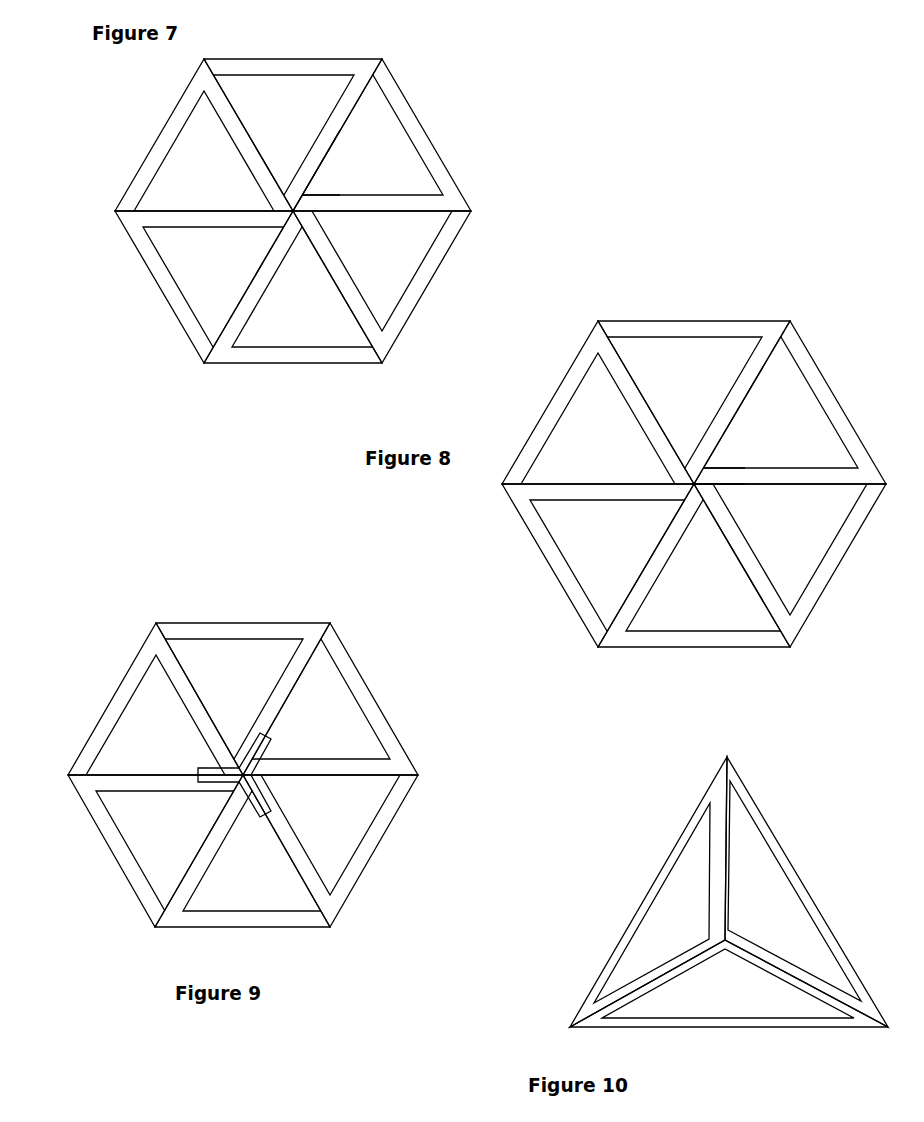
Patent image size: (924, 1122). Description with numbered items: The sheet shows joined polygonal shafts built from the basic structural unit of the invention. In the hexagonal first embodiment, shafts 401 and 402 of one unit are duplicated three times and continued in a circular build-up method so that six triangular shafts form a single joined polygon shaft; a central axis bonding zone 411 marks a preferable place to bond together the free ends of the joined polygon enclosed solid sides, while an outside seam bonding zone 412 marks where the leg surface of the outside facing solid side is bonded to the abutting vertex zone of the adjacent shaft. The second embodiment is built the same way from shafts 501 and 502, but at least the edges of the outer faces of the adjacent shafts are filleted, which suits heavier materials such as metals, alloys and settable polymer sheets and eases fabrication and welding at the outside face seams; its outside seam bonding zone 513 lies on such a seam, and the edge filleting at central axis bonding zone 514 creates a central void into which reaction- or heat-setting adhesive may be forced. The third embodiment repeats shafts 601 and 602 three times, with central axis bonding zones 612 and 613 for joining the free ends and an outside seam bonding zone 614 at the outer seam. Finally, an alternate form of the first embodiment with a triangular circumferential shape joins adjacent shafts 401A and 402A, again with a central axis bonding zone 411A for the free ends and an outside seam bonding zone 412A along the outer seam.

In FIG. 7, the shaft 401 is at (165, 110).
In FIG. 7, the shaft 402 is at (347, 53).
In FIG. 7, the central axis bonding zone 411 is at (323, 183).
In FIG. 7, the outside seam bonding zone 412 is at (372, 95).
In FIG. 8, the shaft 501 is at (548, 378).
In FIG. 8, the shaft 502 is at (712, 310).
In FIG. 8, the outside seam bonding zone 513 is at (795, 370).
In FIG. 8, the central axis bonding zone 514 is at (742, 458).
In FIG. 9, the shaft 601 is at (95, 672).
In FIG. 9, the shaft 602 is at (250, 612).
In FIG. 9, the central axis bonding zone 612 is at (287, 795).
In FIG. 9, the central axis bonding zone 613 is at (290, 748).
In FIG. 9, the outside seam bonding zone 614 is at (325, 660).
In FIG. 10, the shaft 401A is at (672, 832).
In FIG. 10, the shaft 402A is at (808, 868).
In FIG. 10, the central axis bonding zone 411A is at (745, 962).
In FIG. 10, the outside seam bonding zone 412A is at (732, 803).